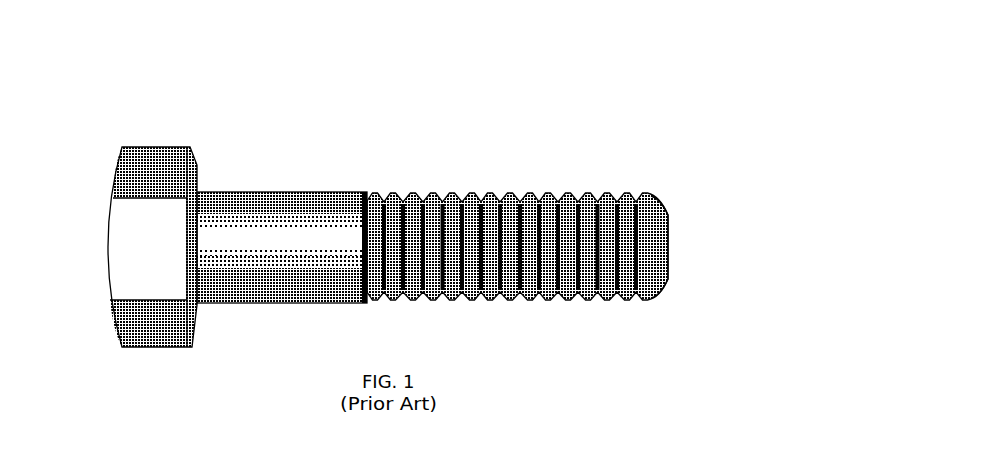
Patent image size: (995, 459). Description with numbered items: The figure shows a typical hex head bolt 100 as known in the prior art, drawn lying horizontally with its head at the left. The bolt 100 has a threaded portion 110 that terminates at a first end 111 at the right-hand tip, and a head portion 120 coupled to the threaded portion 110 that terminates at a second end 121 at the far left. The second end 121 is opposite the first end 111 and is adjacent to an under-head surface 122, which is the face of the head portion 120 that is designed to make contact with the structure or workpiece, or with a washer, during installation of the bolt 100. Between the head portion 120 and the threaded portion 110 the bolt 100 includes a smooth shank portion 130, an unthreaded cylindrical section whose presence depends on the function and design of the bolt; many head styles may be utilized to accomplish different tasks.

The bolt 100 is at (667, 43).
The threaded portion 110 is at (675, 128).
The first end 111 is at (696, 242).
The head portion 120 is at (207, 130).
The second end 121 is at (116, 224).
The under-head surface 122 is at (217, 328).
The smooth shank portion 130 is at (372, 130).